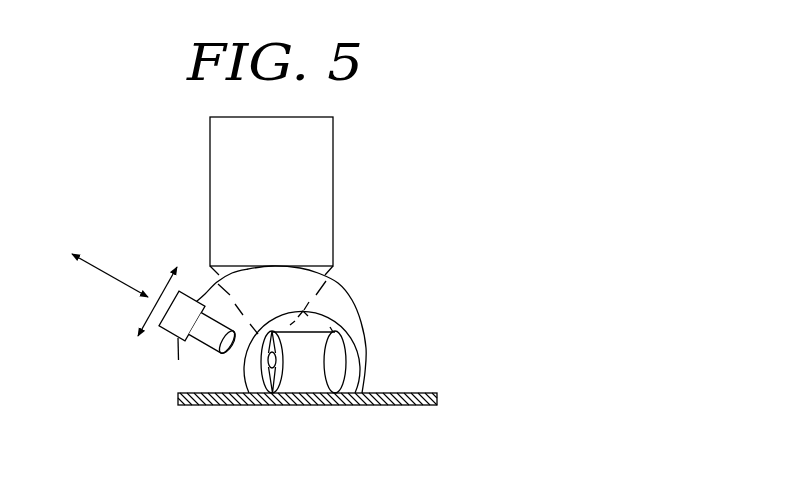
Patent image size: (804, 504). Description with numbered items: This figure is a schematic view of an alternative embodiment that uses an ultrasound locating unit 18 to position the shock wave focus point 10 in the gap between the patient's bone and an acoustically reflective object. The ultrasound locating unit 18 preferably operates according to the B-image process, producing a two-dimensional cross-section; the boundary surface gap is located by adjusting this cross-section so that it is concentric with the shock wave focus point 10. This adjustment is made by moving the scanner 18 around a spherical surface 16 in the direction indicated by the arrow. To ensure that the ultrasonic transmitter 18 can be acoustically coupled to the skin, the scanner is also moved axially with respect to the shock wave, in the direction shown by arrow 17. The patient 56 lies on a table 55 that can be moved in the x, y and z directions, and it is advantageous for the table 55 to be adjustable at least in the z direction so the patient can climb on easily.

The shock wave focus point 10 is at (288, 188).
The spherical surface 16 is at (148, 317).
The arrow 17 is at (92, 267).
The ultrasound locating unit 18 is at (196, 342).
The table 55 is at (217, 407).
The patient 56 is at (287, 372).